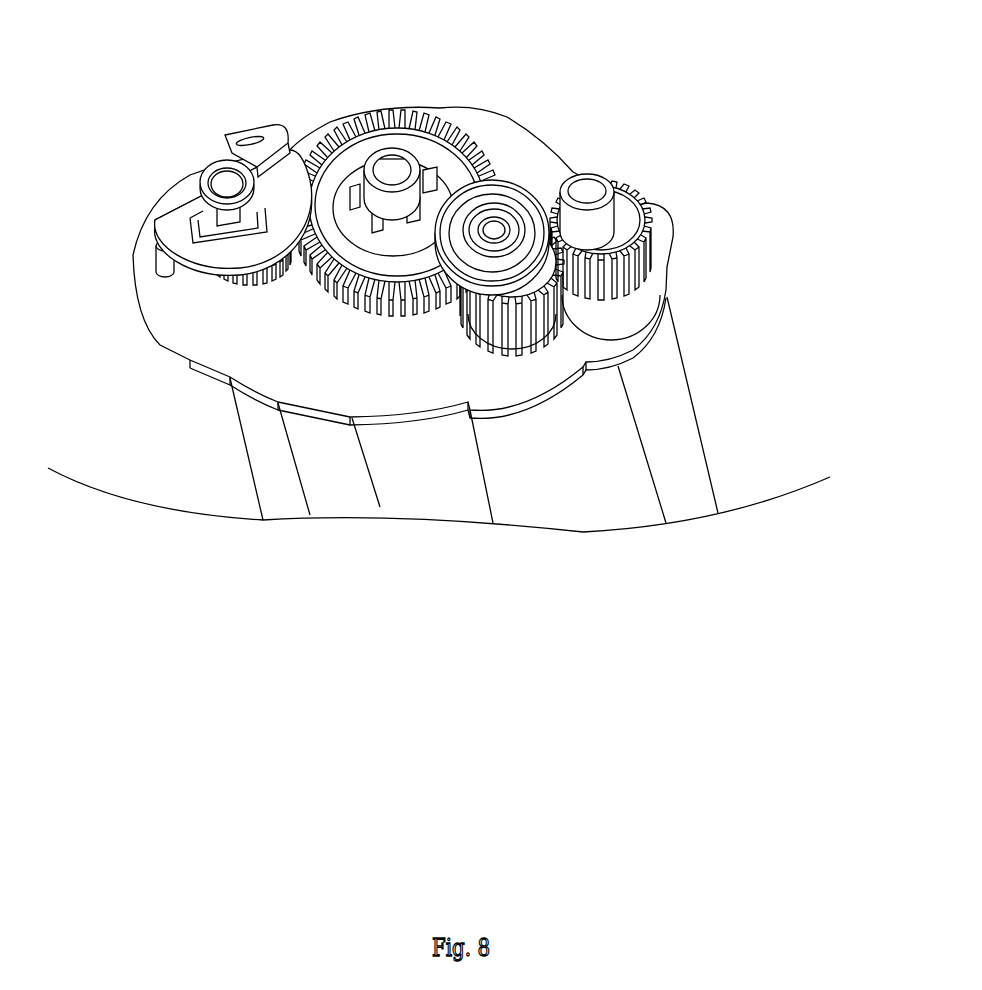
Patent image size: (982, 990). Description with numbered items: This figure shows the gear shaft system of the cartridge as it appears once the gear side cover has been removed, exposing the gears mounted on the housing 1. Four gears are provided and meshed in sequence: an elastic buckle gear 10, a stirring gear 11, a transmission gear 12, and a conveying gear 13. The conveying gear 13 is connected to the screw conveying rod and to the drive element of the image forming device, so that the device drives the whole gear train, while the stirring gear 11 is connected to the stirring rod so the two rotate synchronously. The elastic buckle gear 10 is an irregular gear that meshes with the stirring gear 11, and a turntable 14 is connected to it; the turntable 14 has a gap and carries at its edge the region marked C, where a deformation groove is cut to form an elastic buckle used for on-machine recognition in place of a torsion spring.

The housing 1 is at (668, 418).
The elastic buckle gear 10 is at (237, 287).
The stirring gear 11 is at (460, 137).
The transmission gear 12 is at (517, 217).
The conveying gear 13 is at (610, 193).
The turntable 14 is at (180, 149).
The region C is at (259, 131).